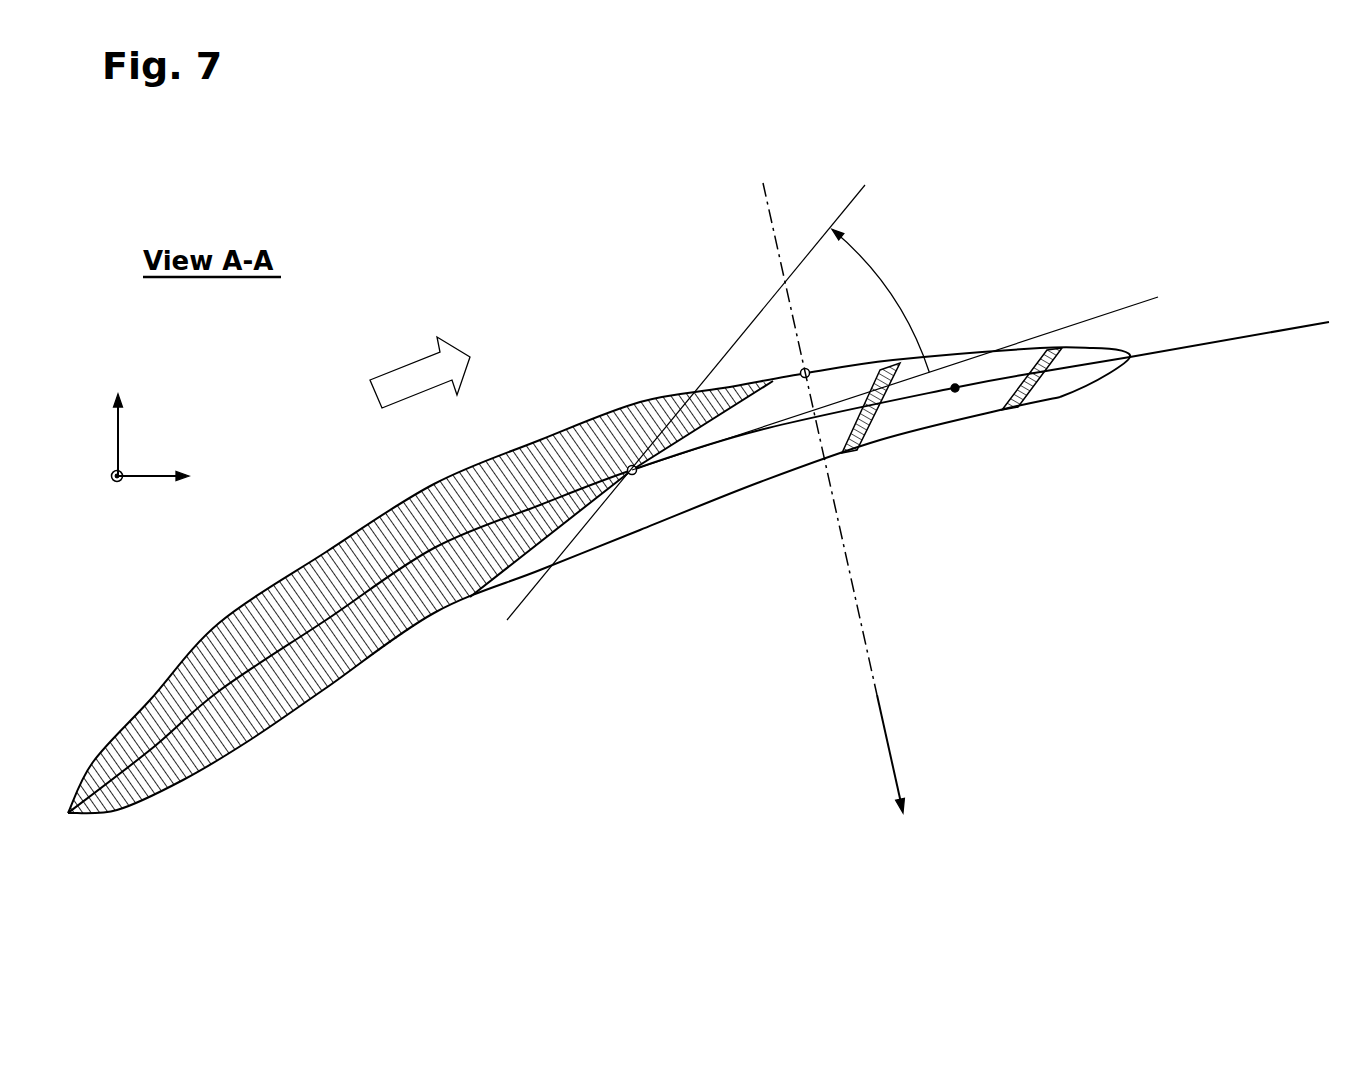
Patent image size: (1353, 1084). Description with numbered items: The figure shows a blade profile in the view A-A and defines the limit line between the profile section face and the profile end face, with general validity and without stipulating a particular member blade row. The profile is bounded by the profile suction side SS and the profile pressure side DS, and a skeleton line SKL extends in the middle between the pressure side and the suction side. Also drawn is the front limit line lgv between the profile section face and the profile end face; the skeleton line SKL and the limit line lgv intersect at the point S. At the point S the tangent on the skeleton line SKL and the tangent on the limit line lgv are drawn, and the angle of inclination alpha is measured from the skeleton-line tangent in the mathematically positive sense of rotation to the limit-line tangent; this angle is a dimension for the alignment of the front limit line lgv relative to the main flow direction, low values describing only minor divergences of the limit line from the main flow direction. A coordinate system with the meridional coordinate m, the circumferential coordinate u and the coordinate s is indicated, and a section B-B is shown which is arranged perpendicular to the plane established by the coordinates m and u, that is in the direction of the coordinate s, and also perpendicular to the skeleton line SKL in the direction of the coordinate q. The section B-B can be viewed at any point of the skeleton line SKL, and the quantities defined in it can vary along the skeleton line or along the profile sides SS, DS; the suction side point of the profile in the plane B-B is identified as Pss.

The profile suction side SS is at (580, 579).
The profile pressure side DS is at (564, 605).
The skeleton line SKL is at (955, 388).
The intersection point S is at (642, 489).
The suction side point Pss is at (832, 354).
The front limit line lgv is at (723, 413).
The section B- B is at (757, 202).
The coordinate q is at (900, 754).
The circumferential coordinate u is at (107, 435).
The meridional coordinate m is at (171, 479).
The coordinate s is at (106, 495).